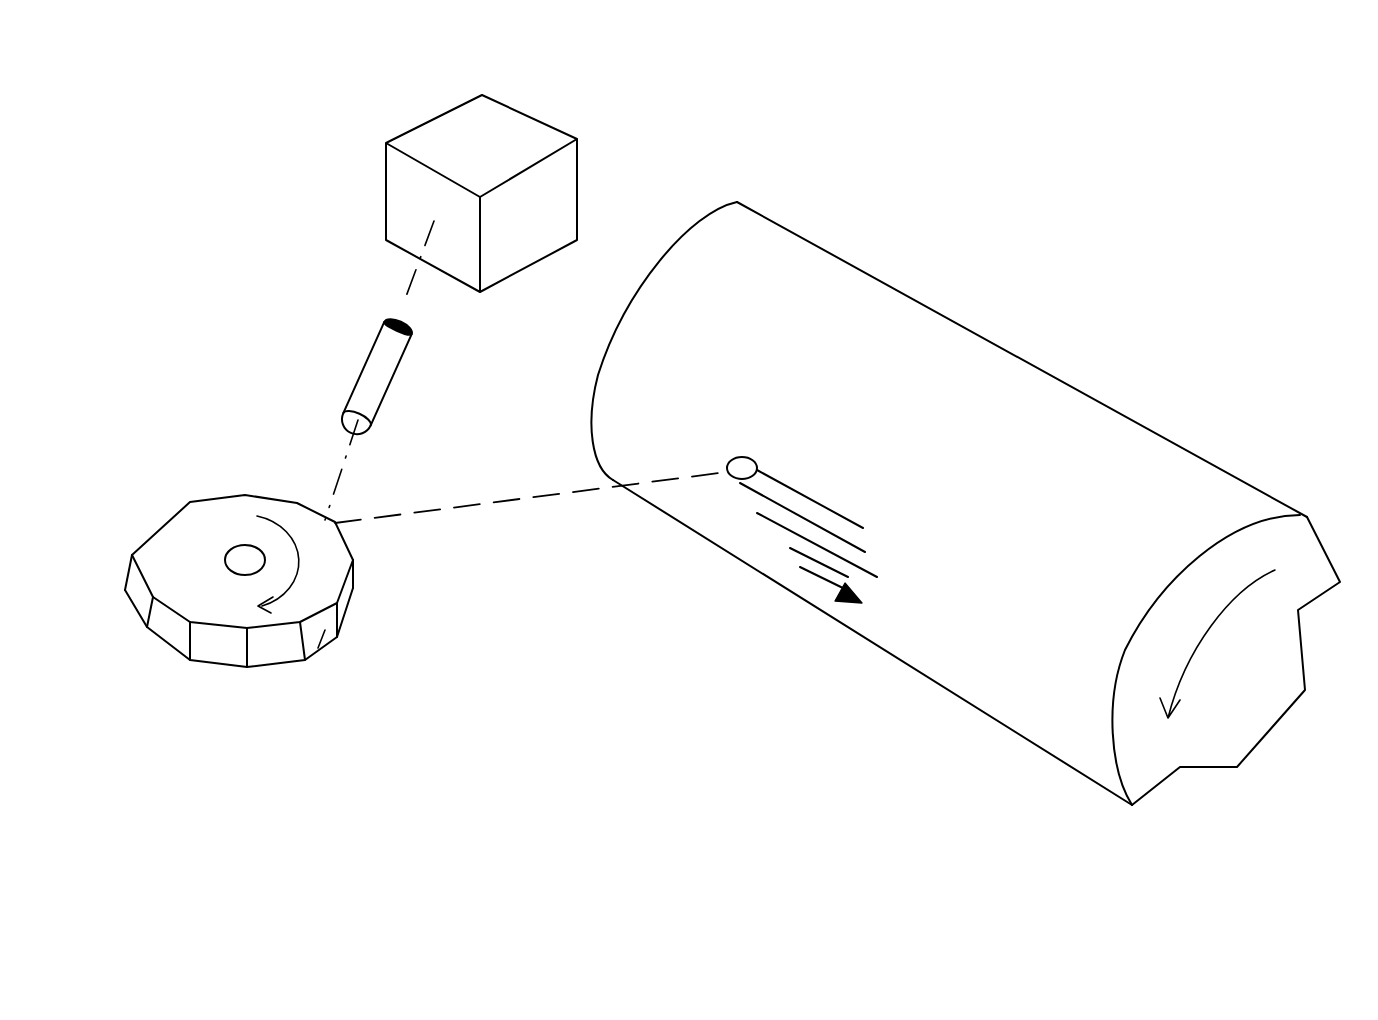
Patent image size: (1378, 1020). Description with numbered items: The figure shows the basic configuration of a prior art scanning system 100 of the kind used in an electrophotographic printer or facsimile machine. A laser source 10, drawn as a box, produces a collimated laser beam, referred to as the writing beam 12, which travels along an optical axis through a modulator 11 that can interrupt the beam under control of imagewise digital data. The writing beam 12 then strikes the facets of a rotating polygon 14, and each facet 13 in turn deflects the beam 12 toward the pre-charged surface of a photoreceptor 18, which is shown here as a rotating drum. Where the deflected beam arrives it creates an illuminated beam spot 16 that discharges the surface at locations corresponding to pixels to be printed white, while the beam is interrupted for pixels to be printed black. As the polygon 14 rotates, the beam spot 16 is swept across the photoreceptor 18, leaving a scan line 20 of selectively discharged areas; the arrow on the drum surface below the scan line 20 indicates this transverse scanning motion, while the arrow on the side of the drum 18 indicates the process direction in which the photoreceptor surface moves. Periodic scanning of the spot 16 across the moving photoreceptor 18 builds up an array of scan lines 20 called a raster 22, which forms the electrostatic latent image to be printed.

The scanning system 100 is at (232, 56).
The laser source 10 is at (422, 122).
The modulator 11 is at (365, 364).
The writing beam 12 is at (432, 515).
The reflecting facet 13 is at (273, 650).
The rotating polygon 14 is at (215, 497).
The beam spot 16 is at (744, 457).
The photoreceptor 18 is at (877, 292).
The scan line 20 is at (820, 503).
The raster 22 is at (900, 530).